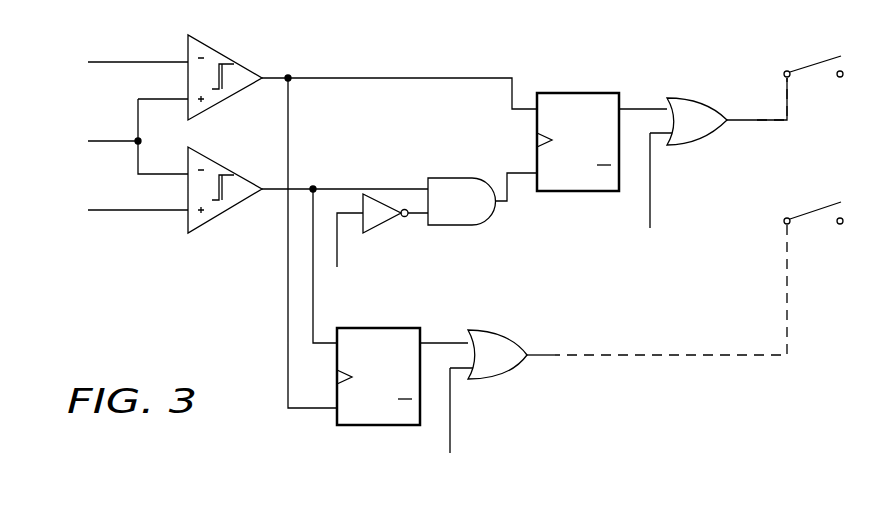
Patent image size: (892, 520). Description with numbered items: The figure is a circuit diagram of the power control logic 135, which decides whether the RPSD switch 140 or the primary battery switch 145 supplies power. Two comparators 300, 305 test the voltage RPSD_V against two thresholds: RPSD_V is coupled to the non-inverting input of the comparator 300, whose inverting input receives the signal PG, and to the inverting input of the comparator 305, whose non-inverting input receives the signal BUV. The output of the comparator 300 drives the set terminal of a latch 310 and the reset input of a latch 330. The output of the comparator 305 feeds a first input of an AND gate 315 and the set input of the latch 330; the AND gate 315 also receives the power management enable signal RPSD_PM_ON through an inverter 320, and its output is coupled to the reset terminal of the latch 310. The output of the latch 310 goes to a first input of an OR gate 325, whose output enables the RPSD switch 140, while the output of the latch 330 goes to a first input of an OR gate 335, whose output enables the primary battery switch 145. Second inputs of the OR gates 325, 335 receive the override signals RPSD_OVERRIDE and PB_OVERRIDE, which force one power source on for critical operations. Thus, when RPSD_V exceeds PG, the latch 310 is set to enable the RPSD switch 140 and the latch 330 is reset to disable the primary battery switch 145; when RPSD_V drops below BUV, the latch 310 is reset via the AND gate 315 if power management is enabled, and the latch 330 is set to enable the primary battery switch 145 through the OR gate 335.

The power control logic 135 is at (795, 503).
The RPSD switch 140 is at (800, 78).
The primary battery switch 145 is at (699, 269).
The comparator 300 is at (243, 60).
The comparator 305 is at (244, 175).
The latch 310 is at (580, 92).
The AND gate 315 is at (450, 177).
The inverter 320 is at (385, 223).
The OR gate 325 is at (695, 97).
The latch 330 is at (378, 427).
The OR gate 335 is at (508, 330).